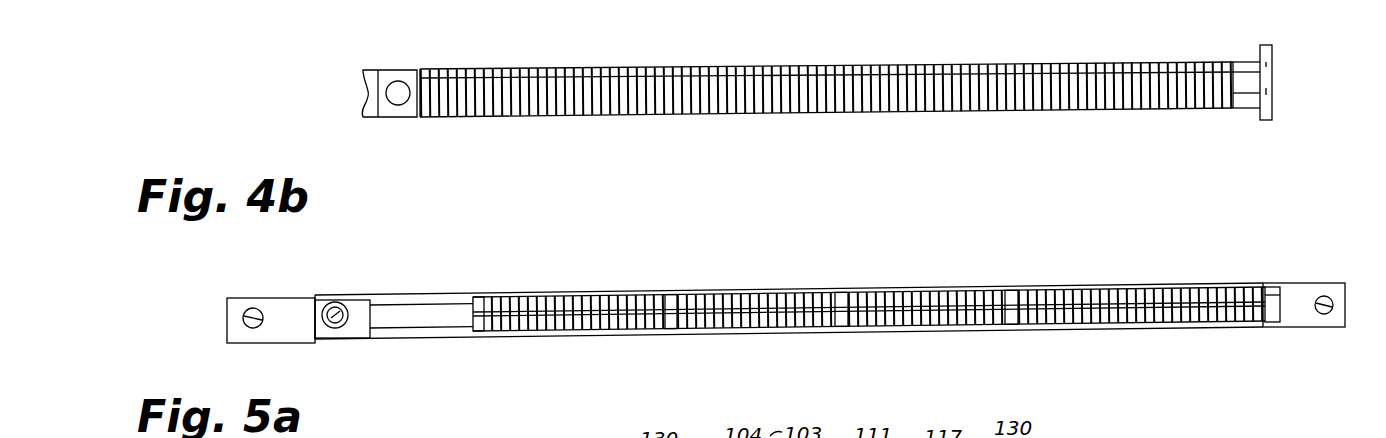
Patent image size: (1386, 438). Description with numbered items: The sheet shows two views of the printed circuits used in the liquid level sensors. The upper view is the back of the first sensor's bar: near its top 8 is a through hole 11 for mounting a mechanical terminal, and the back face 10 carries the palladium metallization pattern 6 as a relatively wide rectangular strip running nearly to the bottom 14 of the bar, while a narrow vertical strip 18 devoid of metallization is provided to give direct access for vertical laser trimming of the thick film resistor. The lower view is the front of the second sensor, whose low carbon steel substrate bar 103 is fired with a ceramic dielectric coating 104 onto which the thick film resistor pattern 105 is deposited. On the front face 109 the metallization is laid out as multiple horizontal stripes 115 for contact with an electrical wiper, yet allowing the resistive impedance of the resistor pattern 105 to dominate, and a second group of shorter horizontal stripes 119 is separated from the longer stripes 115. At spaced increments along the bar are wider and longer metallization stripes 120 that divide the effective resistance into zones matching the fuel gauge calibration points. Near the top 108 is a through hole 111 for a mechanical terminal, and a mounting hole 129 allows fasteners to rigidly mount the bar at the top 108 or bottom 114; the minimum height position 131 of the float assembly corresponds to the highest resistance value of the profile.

In FIG. 4B, the palladium metallization pattern 6 is at (1052, 103).
In FIG. 4B, the top of bar 8 is at (397, 117).
In FIG. 4B, the back face 10 is at (1193, 108).
In FIG. 4B, the through hole 11 is at (411, 85).
In FIG. 4B, the bottom of bar 14 is at (1273, 108).
In FIG. 4B, the narrow vertical strip 18 is at (572, 75).
In FIG. 5A, the substrate bar 103 is at (430, 295).
In FIG. 5A, the ceramic dielectric coating 104 is at (401, 297).
In FIG. 5A, the thick film resistor pattern 105 is at (745, 300).
In FIG. 5A, the top of bar 108 is at (252, 298).
In FIG. 5A, the front face 109 is at (870, 288).
In FIG. 5A, the through hole 111 is at (338, 324).
In FIG. 5A, the bottom of bar 114 is at (1322, 327).
In FIG. 5A, the horizontal metallization stripes 115 is at (775, 303).
In FIG. 5A, the horizontal metallization stripes 119 is at (640, 326).
In FIG. 5A, the wider horizontal metallization stripes 120 is at (670, 297).
In FIG. 5A, the mounting hole 129 is at (243, 318).
In FIG. 5A, the minimum height position 131 is at (1272, 296).